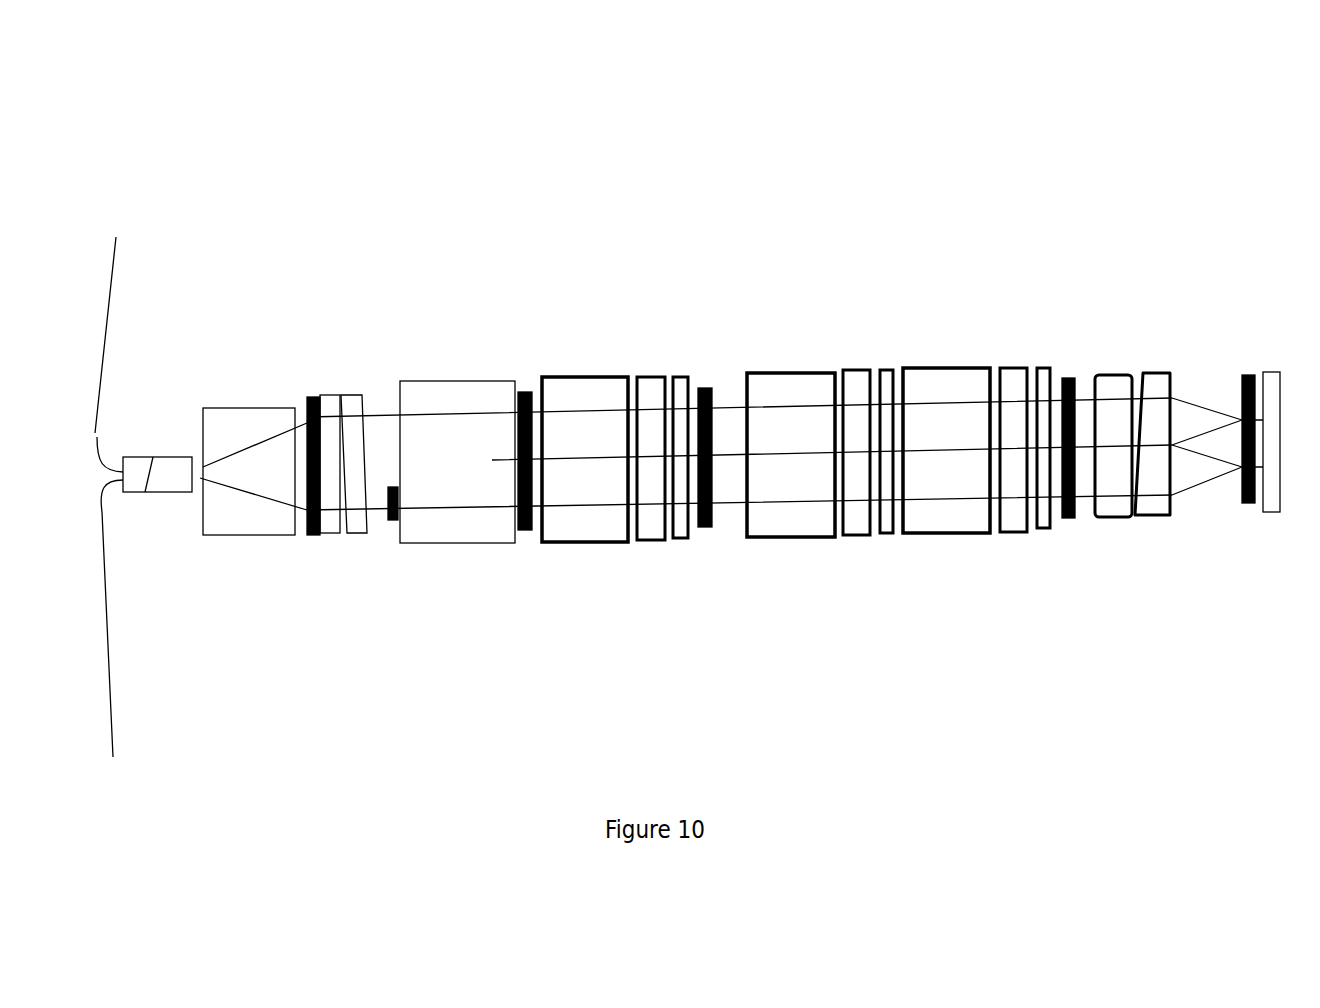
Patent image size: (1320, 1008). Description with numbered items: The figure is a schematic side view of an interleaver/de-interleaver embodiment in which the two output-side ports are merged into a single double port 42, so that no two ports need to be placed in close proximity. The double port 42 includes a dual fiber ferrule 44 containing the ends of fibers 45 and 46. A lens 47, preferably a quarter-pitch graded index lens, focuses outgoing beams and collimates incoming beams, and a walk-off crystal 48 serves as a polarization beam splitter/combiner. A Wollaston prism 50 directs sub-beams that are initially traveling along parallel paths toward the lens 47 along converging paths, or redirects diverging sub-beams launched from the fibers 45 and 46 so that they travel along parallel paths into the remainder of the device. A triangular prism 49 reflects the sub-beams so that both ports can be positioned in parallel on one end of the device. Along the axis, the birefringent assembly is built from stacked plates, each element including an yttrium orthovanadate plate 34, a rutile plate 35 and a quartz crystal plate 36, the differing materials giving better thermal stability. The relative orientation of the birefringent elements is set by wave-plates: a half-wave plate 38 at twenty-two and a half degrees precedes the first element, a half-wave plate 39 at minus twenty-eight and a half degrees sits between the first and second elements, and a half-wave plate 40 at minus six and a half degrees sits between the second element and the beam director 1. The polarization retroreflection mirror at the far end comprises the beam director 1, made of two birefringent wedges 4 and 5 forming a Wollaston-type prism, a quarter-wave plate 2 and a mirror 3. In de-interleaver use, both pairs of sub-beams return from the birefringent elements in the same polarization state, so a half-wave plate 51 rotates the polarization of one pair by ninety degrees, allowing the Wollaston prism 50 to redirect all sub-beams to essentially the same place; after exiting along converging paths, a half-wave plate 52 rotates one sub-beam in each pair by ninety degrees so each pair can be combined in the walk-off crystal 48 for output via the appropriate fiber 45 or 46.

The beam director 1 is at (1120, 320).
The quarter-wave plate 2 is at (1247, 373).
The mirror 3 is at (1280, 514).
The birefringent wedge 4 is at (1107, 520).
The birefringent wedge 5 is at (1167, 518).
The yttrium orthovanadate plate 34 is at (933, 368).
The rutile plate 35 is at (1017, 533).
The quartz crystal plate 36 is at (1037, 368).
The half-wave plate 38 is at (523, 387).
The half-wave plate 39 is at (705, 387).
The half-wave plate 40 is at (1063, 520).
The double port 42 is at (210, 272).
The dual fiber ferrule 44 is at (130, 495).
The fiber 45 is at (114, 326).
The fiber 46 is at (123, 639).
The lens 47 is at (165, 468).
The walk-off crystal 48 is at (248, 537).
The triangular prism 49 is at (472, 485).
The Wollaston prism 50 is at (349, 362).
The half-wave plate 51 is at (398, 522).
The half-wave plate 52 is at (310, 393).